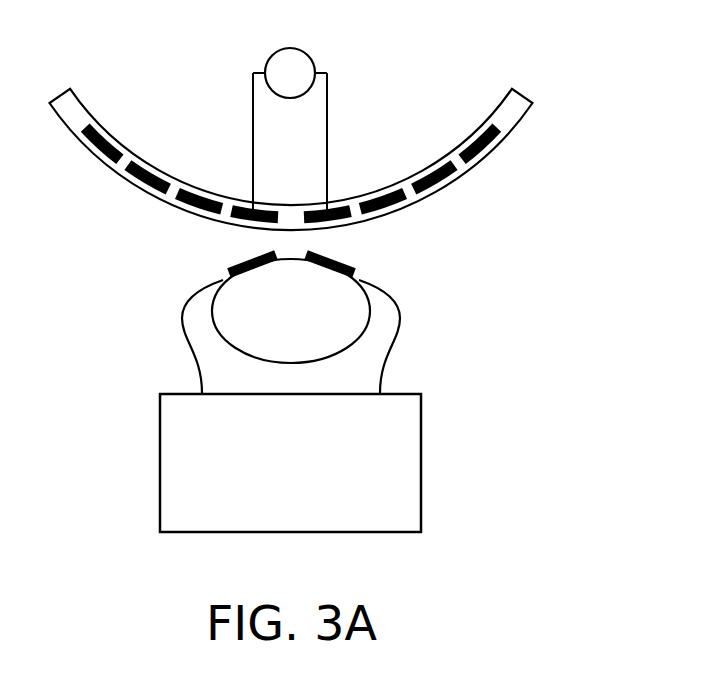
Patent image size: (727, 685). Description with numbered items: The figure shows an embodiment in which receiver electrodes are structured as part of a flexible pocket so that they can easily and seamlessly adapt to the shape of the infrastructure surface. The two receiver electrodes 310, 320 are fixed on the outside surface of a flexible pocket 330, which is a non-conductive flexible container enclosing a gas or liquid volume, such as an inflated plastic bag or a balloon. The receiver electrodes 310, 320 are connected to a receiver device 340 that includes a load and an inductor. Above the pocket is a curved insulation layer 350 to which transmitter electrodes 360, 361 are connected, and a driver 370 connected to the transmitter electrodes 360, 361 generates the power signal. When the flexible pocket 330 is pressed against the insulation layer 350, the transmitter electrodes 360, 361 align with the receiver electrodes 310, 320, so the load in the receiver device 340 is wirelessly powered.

The receiver electrode 310 is at (350, 268).
The receiver electrode 320 is at (230, 270).
The flexible pocket 330 is at (312, 326).
The receiver device 340 is at (312, 497).
The insulation layer 350 is at (522, 119).
The transmitter electrode 360 is at (338, 210).
The transmitter electrode 361 is at (247, 208).
The driver 370 is at (307, 53).